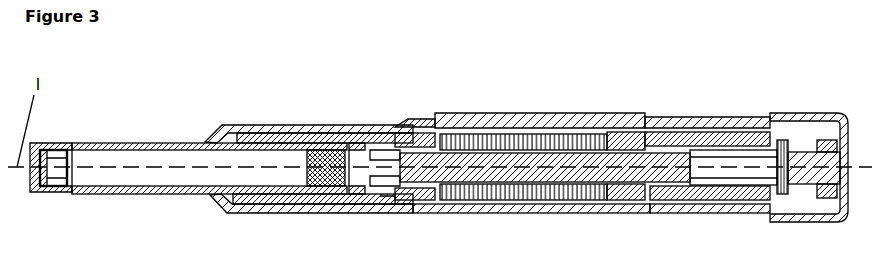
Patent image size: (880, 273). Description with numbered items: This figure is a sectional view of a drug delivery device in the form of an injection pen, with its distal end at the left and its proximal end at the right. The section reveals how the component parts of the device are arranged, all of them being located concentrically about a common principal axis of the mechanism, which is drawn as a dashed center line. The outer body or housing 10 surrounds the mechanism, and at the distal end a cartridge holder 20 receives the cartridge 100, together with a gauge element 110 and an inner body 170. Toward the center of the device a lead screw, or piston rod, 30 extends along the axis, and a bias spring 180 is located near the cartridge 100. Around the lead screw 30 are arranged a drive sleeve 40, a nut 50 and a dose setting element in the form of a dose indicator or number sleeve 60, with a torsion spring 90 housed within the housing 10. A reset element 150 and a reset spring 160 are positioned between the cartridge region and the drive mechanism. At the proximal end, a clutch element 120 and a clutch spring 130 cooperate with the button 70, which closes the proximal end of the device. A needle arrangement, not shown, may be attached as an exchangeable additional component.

The housing 10 is at (490, 118).
The cartridge holder 20 is at (97, 137).
The lead screw 30 is at (448, 172).
The drive sleeve 40 is at (653, 150).
The nut 50 is at (705, 143).
The dose indicator 60 is at (617, 135).
The button 70 is at (830, 175).
The torsion spring 90 is at (518, 138).
The cartridge 100 is at (145, 187).
The gauge element 110 is at (308, 127).
The clutch element 120 is at (780, 183).
The clutch spring 130 is at (387, 182).
The reset element 150 is at (390, 138).
The reset spring 160 is at (413, 198).
The inner body 170 is at (252, 130).
The bias spring 180 is at (353, 150).